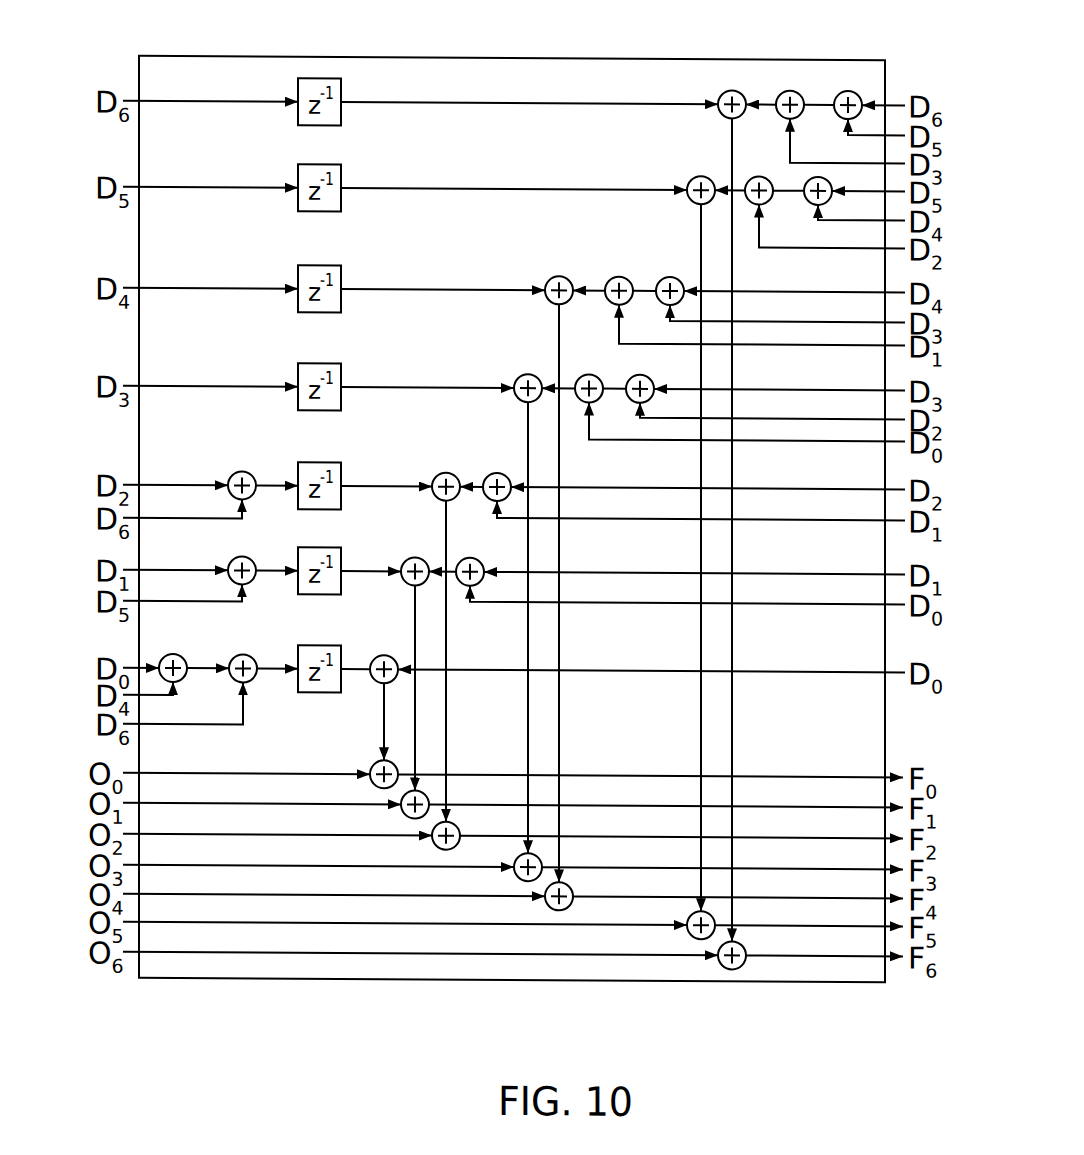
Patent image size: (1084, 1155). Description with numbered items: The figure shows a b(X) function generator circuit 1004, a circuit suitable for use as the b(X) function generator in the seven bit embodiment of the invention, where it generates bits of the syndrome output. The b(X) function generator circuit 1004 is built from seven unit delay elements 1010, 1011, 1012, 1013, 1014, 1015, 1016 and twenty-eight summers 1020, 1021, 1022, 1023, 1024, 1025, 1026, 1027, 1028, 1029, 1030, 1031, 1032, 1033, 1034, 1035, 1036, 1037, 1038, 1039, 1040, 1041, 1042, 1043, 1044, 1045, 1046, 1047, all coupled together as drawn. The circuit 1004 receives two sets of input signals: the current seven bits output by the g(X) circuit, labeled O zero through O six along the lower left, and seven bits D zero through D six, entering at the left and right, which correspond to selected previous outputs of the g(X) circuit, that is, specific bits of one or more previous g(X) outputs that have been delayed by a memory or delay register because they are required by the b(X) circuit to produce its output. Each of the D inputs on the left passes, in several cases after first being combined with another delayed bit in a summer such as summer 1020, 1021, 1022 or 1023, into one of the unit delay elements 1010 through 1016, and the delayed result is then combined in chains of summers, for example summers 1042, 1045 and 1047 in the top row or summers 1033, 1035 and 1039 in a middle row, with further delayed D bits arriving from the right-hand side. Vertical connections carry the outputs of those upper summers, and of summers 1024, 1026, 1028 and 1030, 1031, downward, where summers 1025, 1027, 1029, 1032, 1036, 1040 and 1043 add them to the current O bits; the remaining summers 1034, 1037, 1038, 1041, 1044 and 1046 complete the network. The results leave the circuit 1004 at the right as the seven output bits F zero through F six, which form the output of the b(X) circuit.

The b(X) function generator circuit 1004 is at (483, 55).
The unit delay element 1010 is at (326, 77).
The unit delay element 1011 is at (374, 158).
The unit delay element 1012 is at (374, 258).
The unit delay element 1013 is at (372, 352).
The unit delay element 1014 is at (338, 460).
The unit delay element 1015 is at (338, 545).
The unit delay element 1016 is at (305, 643).
The summer 1020 is at (173, 653).
The summer 1021 is at (242, 470).
The summer 1022 is at (242, 555).
The summer 1023 is at (250, 679).
The summer 1024 is at (393, 657).
The summer 1025 is at (376, 760).
The summer 1026 is at (428, 530).
The summer 1027 is at (422, 789).
The summer 1028 is at (446, 470).
The summer 1029 is at (446, 847).
The summer 1030 is at (478, 558).
The summer 1031 is at (500, 471).
The summer 1032 is at (536, 852).
The summer 1033 is at (521, 397).
The summer 1034 is at (551, 299).
The summer 1035 is at (591, 353).
The summer 1036 is at (565, 880).
The summer 1037 is at (611, 276).
The summer 1038 is at (683, 261).
The summer 1039 is at (648, 373).
The summer 1040 is at (693, 932).
The summer 1041 is at (693, 198).
The summer 1042 is at (724, 89).
The summer 1043 is at (741, 940).
The summer 1044 is at (752, 174).
The summer 1045 is at (794, 71).
The summer 1046 is at (814, 172).
The summer 1047 is at (855, 88).